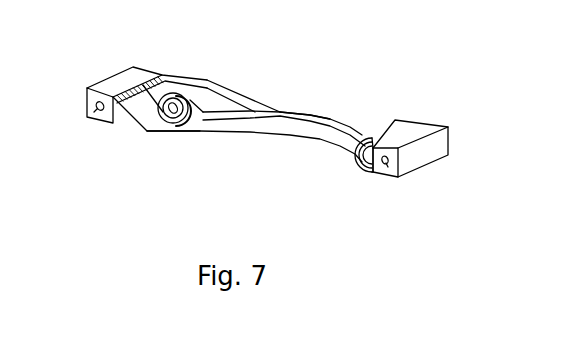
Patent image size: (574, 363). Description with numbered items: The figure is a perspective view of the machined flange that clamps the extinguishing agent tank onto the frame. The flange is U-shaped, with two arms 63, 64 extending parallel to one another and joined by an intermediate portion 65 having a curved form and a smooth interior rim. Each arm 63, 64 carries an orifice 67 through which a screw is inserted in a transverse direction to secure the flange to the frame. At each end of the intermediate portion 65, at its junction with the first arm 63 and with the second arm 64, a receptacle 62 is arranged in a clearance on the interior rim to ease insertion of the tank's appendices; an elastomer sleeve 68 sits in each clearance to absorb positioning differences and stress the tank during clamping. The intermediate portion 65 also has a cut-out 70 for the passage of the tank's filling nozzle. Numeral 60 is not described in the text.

The connecting arm 60 is at (282, 112).
The receptacle 62 is at (168, 118).
The first arm 63 is at (440, 122).
The second arm 64 is at (134, 70).
The intermediate portion 65 is at (252, 125).
The orifice 67 is at (90, 118).
The elastomer sleeve 68 is at (147, 130).
The cut-out 70 is at (332, 104).